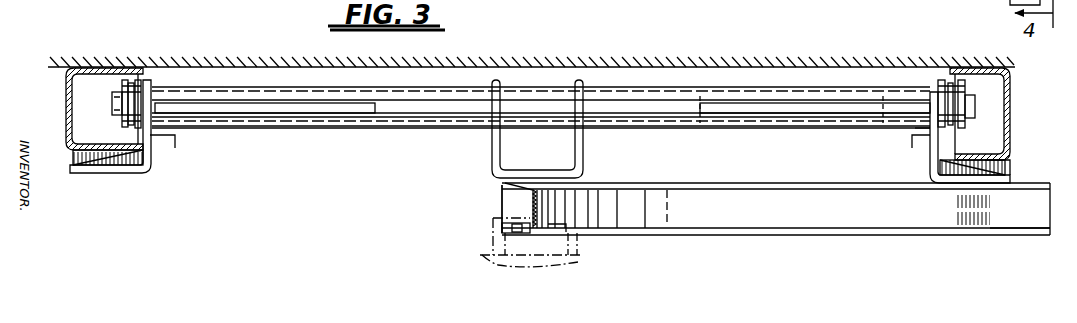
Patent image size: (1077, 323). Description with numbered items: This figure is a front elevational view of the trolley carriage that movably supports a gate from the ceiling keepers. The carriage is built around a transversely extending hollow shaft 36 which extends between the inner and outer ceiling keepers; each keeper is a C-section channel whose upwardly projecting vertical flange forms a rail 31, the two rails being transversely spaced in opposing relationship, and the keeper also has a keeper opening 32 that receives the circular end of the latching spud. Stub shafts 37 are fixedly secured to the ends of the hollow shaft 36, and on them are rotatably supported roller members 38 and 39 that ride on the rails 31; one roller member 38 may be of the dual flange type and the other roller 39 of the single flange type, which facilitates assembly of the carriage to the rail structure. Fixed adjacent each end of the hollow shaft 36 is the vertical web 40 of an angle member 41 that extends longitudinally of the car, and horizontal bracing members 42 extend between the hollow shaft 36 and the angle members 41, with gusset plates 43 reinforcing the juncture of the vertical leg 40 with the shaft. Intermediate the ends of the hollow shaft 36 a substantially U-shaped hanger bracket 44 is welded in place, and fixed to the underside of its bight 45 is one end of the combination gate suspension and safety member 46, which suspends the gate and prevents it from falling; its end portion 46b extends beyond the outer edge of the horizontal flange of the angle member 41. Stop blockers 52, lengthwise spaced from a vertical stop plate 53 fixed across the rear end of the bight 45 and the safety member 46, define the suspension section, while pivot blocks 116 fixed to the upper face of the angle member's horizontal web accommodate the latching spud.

The rail 31 is at (930, 135).
The keeper opening 32 is at (100, 143).
The hollow shaft 36 is at (385, 128).
The stub shaft 37 is at (112, 100).
The roller member 38 is at (142, 80).
The roller member 39 is at (942, 87).
The vertical web 40 is at (173, 141).
The angle member 41 is at (134, 173).
The horizontal bracing member 42 is at (258, 100).
The gusset plate 43 is at (176, 150).
The hanger bracket 44 is at (582, 82).
The bight 45 is at (503, 183).
The combination gate suspension and safety member 46 is at (698, 182).
The end portion 46b is at (1036, 226).
The stop blocker 52 is at (495, 224).
The vertical stop plate 53 is at (508, 204).
The pivot block 116 is at (1003, 173).